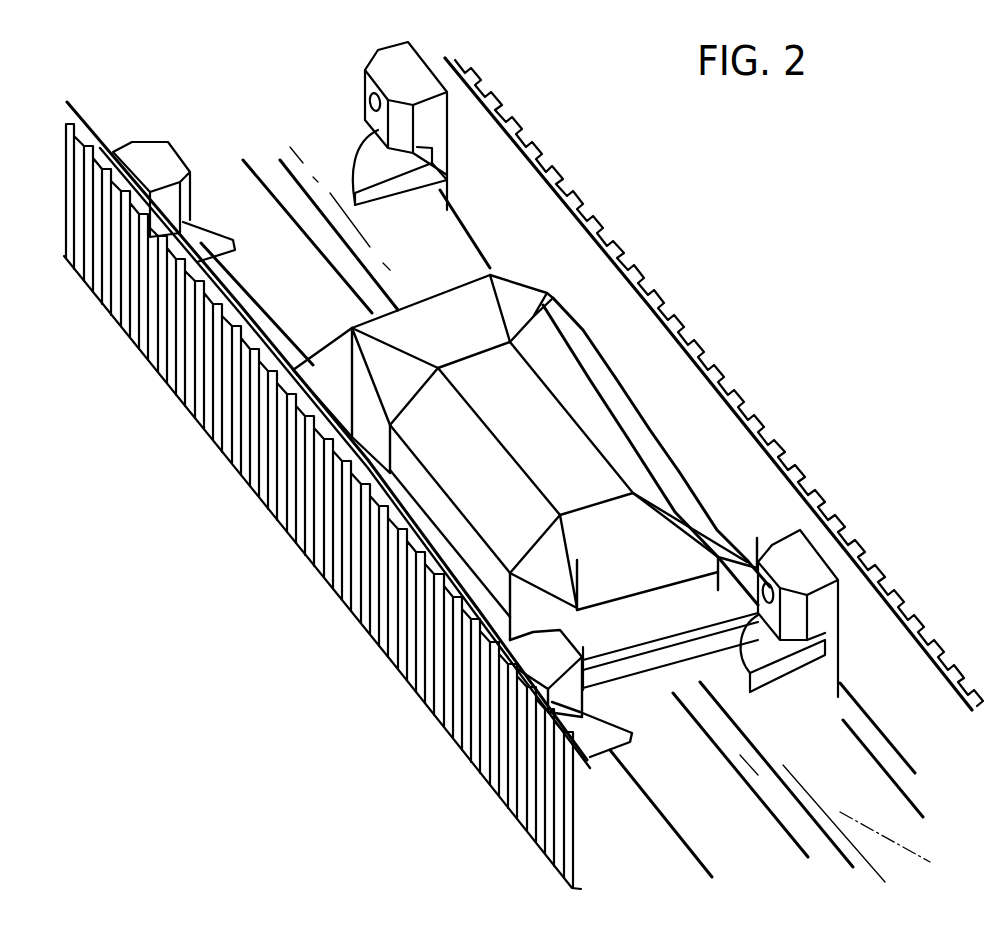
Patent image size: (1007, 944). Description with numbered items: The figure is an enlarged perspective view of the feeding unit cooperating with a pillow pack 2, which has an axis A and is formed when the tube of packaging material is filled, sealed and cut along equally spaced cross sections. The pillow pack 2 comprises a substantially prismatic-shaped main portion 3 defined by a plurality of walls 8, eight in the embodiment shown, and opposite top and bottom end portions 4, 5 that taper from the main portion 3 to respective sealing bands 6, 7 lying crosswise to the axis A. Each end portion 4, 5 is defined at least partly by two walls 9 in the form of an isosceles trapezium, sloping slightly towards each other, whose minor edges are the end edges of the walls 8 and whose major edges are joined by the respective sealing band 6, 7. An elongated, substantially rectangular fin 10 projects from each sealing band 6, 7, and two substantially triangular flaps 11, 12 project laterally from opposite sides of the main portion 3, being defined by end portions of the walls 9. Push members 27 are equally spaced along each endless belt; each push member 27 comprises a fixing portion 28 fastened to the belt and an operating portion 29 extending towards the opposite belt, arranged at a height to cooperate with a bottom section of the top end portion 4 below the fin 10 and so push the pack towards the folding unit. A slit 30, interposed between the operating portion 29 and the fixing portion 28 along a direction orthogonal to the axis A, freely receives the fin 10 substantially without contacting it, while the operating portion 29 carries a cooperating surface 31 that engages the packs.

The pillow pack 2 is at (440, 445).
The main portion 3 is at (597, 354).
The top end portion 4 is at (735, 575).
The bottom end portion 5 is at (482, 300).
The sealing band 6 is at (650, 640).
The sealing band 7 is at (302, 370).
The walls 8 is at (480, 460).
The walls 9 is at (462, 310).
The fin 10 is at (300, 372).
The flap 11 is at (556, 624).
The flap 12 is at (560, 205).
The push member 27 is at (150, 132).
The fixing portion 28 is at (430, 108).
The operating portion 29 is at (373, 157).
The slit 30 is at (430, 165).
The cooperating surface 31 is at (290, 147).
The axis A is at (894, 841).